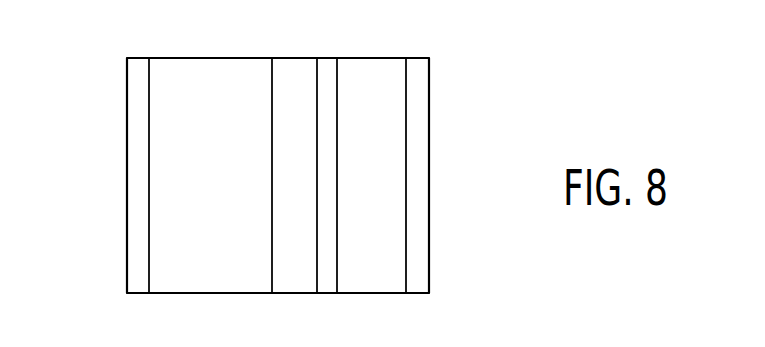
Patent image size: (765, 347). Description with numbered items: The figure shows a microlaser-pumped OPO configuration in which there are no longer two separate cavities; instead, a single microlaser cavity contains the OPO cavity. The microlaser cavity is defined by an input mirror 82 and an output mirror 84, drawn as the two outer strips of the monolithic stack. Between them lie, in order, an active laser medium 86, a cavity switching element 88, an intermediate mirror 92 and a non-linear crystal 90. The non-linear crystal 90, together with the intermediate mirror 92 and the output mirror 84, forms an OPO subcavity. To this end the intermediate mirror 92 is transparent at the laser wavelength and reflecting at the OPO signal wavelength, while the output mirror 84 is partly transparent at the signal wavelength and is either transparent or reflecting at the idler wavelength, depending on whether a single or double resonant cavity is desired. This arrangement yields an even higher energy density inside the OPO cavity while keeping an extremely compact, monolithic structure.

The input mirror 82 is at (131, 89).
The output mirror 84 is at (423, 257).
The active laser medium 86 is at (226, 291).
The cavity switching element 88 is at (290, 63).
The non-linear crystal 90 is at (378, 64).
The intermediate mirror 92 is at (328, 291).